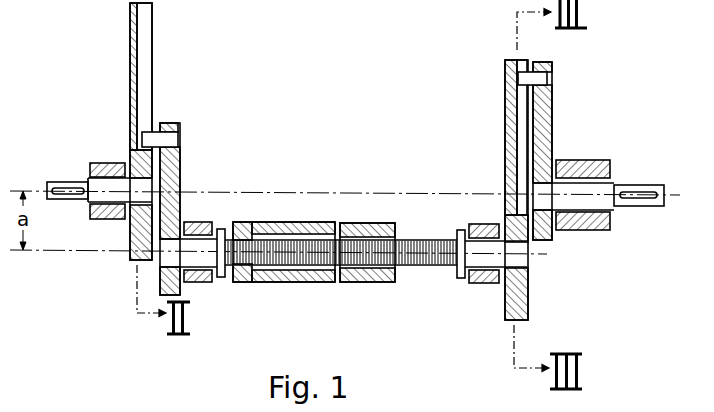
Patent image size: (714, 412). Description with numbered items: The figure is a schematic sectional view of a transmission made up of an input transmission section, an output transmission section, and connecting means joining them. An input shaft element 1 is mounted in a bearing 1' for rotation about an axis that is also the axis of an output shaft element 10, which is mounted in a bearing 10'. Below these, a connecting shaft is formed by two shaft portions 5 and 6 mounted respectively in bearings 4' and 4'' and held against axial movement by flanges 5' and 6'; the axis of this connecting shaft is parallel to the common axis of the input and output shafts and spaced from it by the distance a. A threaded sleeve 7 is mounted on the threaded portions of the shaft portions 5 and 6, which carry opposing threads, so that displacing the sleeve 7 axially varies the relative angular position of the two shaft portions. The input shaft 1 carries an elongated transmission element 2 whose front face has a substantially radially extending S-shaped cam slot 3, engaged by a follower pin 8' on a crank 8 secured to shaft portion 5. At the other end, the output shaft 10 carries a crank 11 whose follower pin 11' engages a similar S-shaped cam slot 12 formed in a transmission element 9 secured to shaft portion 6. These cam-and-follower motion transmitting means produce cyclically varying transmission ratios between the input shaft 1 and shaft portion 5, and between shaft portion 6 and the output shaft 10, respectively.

The input shaft element 1 is at (91, 179).
The bearing 1' is at (97, 171).
The transmission element 2 is at (132, 40).
The cam slot 3 is at (149, 57).
The bearing 4' is at (202, 239).
The bearing 4'' is at (482, 239).
The shaft portion 5 is at (250, 274).
The flange 5' is at (219, 277).
The shaft portion 6 is at (433, 283).
The flange 6' is at (470, 278).
The threaded sleeve 7 is at (362, 283).
The crank 8 is at (186, 209).
The follower pin 8' is at (183, 128).
The transmission element 9 is at (505, 146).
The output shaft element 10 is at (598, 221).
The bearing 10' is at (594, 181).
The crank 11 is at (571, 151).
The follower pin 11' is at (567, 66).
The cam slot 12 is at (522, 117).